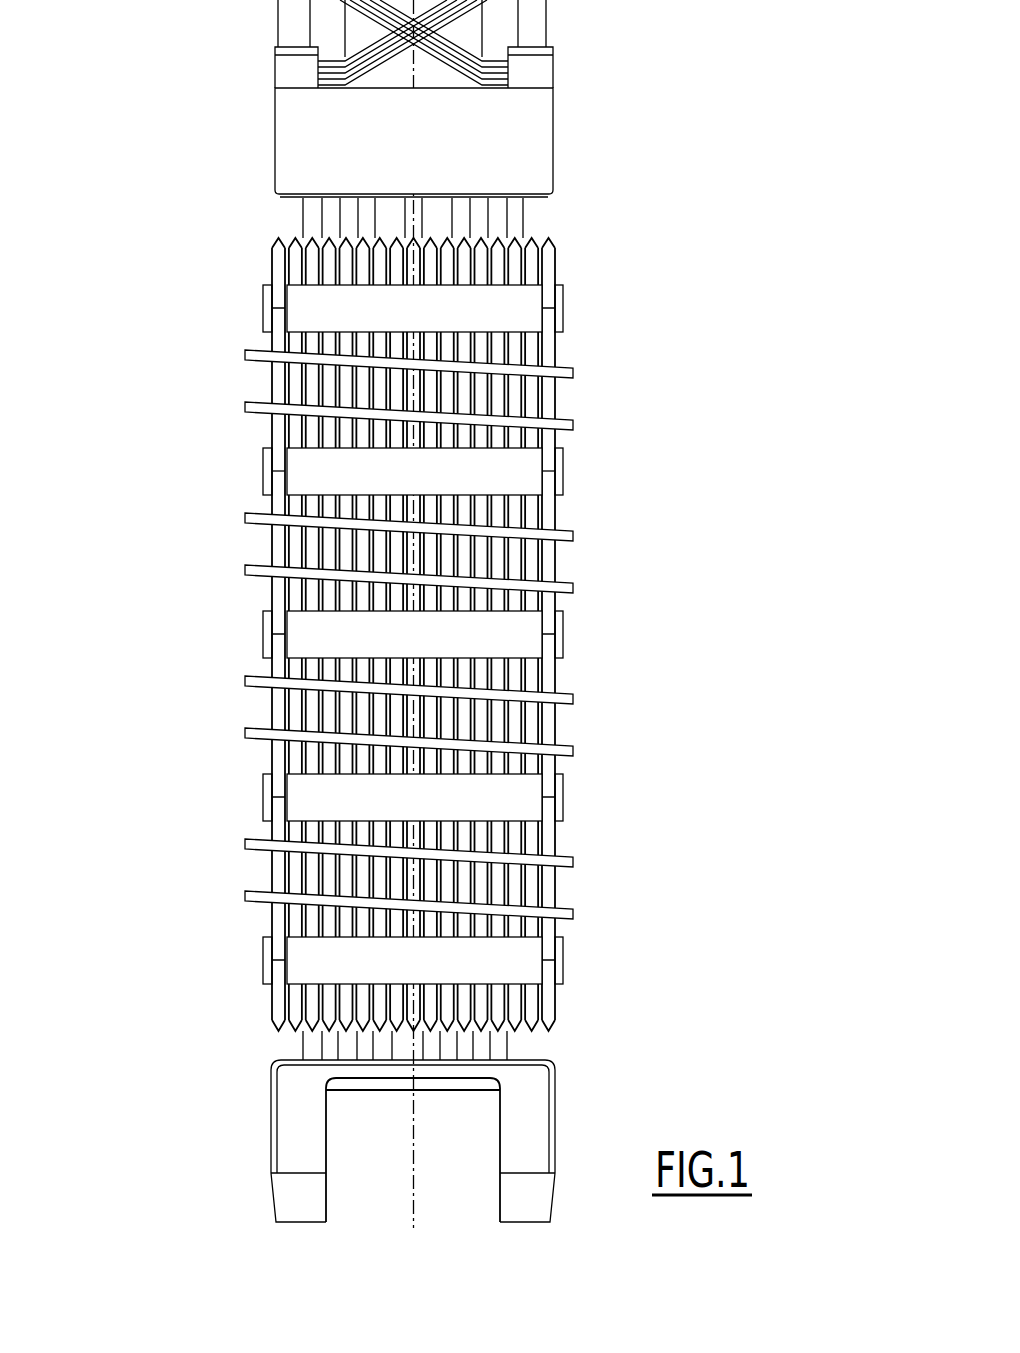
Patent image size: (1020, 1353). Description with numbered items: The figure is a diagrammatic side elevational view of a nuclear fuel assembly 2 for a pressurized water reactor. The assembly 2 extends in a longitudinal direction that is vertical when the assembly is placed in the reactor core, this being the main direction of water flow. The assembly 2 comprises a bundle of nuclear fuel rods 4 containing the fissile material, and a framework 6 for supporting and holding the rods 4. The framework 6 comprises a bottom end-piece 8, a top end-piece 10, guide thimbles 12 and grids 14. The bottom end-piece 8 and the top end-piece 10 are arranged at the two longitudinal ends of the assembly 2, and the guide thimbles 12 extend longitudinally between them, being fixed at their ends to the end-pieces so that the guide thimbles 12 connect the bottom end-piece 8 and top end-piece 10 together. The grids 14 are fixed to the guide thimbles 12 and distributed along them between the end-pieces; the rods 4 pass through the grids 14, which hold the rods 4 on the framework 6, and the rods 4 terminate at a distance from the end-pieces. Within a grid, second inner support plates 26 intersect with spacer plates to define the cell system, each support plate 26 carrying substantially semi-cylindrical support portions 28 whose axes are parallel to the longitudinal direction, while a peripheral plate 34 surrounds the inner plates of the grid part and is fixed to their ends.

The nuclear fuel assembly 2 is at (389, 614).
The nuclear fuel rods 4 is at (545, 273).
The framework 6 is at (409, 599).
The bottom end-piece 8 is at (525, 1133).
The top end-piece 10 is at (525, 157).
The guide thimbles 12 is at (414, 220).
The grids 14 is at (398, 636).
The second inner support plates 26 is at (548, 459).
The semi-cylindrical support portions 28 is at (277, 482).
The peripheral plate 34 is at (355, 480).